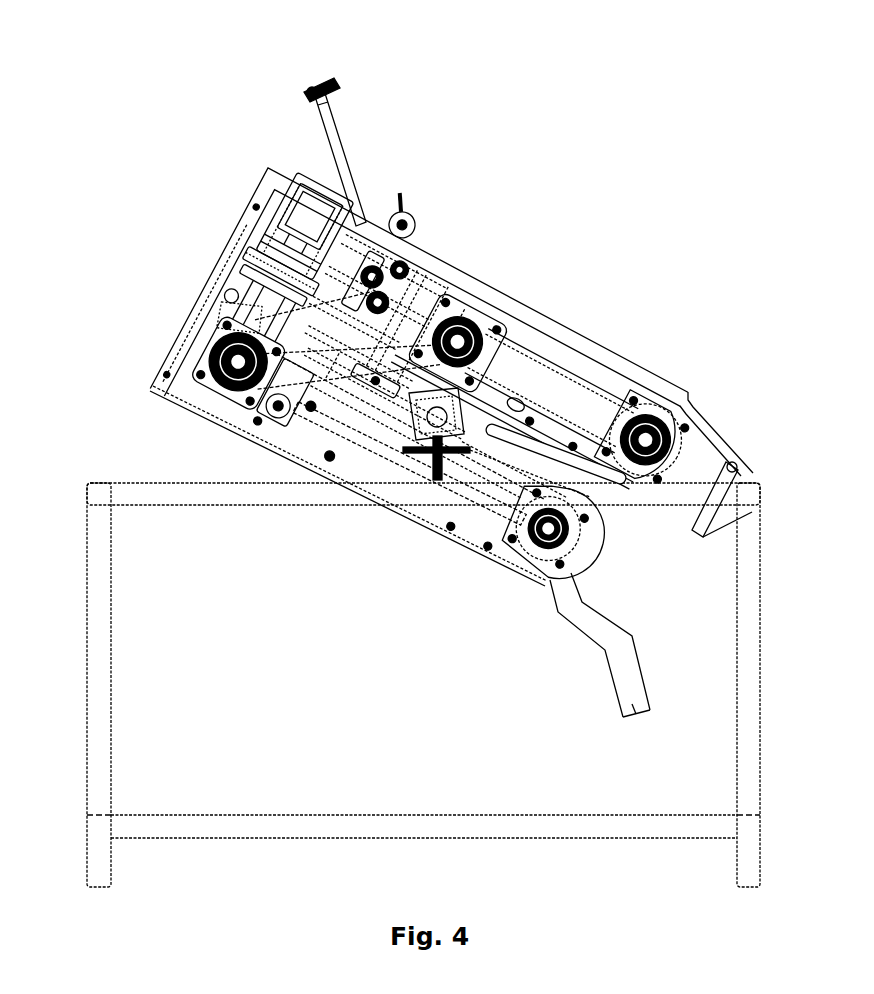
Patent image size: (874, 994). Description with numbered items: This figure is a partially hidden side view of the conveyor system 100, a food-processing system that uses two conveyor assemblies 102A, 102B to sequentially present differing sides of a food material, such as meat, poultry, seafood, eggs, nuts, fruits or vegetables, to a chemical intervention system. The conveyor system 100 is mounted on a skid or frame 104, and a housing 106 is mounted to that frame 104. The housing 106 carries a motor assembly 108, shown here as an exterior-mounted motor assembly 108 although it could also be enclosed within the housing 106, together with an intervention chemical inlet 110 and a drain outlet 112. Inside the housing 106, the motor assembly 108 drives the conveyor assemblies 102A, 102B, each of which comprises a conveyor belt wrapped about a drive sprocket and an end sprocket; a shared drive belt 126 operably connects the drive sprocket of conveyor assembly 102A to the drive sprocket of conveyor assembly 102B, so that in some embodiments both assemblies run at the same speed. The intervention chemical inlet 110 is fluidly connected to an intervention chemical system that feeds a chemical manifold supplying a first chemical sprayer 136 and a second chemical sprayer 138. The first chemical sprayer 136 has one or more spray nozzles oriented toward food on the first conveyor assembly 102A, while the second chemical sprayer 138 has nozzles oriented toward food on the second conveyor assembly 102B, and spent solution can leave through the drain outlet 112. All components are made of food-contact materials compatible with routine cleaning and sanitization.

The conveyor system 100 is at (158, 160).
The conveyor assembly 102A is at (595, 378).
The conveyor assembly 102B is at (483, 518).
The frame 104 is at (745, 803).
The housing 106 is at (483, 278).
The motor assembly 108 is at (358, 205).
The intervention chemical inlet 110 is at (320, 78).
The drain outlet 112 is at (636, 712).
The drive belt 126 is at (295, 325).
The first chemical sprayer 136 is at (405, 278).
The second chemical sprayer 138 is at (386, 292).